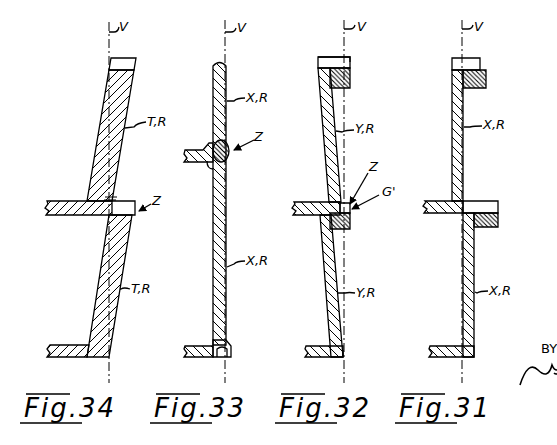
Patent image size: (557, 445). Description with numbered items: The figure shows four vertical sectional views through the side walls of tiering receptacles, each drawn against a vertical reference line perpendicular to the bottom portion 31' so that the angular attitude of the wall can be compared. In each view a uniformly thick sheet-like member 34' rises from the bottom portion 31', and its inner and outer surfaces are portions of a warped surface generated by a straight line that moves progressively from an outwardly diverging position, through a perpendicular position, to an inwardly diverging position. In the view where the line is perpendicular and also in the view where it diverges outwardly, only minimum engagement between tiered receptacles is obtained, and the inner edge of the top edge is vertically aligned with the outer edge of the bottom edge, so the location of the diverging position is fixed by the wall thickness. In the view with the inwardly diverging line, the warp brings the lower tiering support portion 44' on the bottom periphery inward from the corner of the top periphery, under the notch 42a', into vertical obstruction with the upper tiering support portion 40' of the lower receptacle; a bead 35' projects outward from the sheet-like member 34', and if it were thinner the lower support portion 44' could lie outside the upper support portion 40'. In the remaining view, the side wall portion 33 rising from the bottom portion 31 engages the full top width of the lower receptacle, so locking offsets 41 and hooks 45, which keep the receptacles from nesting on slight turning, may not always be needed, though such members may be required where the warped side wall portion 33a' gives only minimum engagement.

In FIG. 33, the bottom portion 31 is at (185, 247).
In FIG. 33, the side wall portion 33 is at (227, 75).
In FIG. 33, the locking offset 41 is at (210, 166).
In FIG. 33, the hook 45 is at (232, 158).
In FIG. 32, the notch 42a' is at (324, 53).
In FIG. 31, the notch 42a' is at (491, 51).
In FIG. 32, the upper tiering support portion 40' is at (353, 133).
In FIG. 32, the bead 35' is at (359, 156).
In FIG. 31, the bead 35' is at (494, 147).
In FIG. 32, the sheet-like member 34' is at (317, 135).
In FIG. 31, the sheet-like member 34' is at (443, 135).
In FIG. 32, the side wall portion 33a' is at (317, 251).
In FIG. 31, the side wall portion 33a' is at (492, 285).
In FIG. 32, the bottom portion 31' is at (317, 267).
In FIG. 31, the bottom portion 31' is at (448, 269).
In FIG. 32, the lower tiering support portion 44' is at (361, 357).